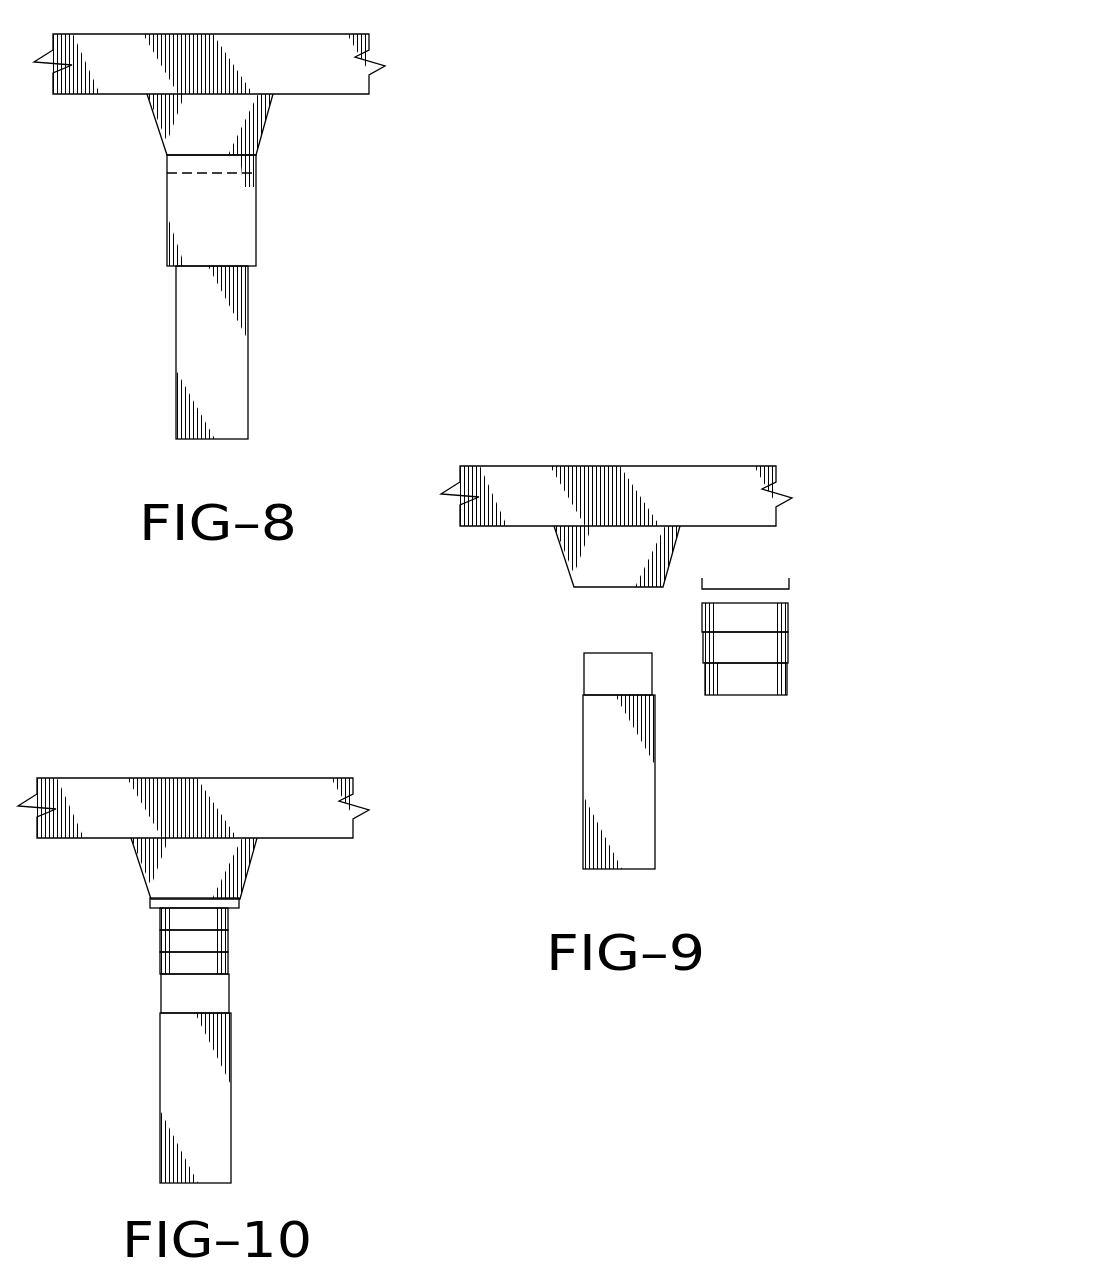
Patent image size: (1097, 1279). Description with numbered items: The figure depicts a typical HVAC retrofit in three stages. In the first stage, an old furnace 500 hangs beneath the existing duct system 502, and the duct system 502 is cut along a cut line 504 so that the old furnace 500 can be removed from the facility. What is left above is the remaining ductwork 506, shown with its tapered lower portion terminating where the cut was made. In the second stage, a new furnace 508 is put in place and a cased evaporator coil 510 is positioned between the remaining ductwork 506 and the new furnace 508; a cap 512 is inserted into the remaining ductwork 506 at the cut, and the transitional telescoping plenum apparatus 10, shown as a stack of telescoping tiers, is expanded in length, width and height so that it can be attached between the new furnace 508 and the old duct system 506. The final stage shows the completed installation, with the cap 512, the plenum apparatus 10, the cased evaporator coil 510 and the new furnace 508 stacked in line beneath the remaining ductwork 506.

In FIG. 9, the transitional telescoping plenum apparatus 10 is at (799, 649).
In FIG. 10, the transitional telescoping plenum apparatus 10 is at (232, 962).
In FIG. 8, the old furnace 500 is at (255, 378).
In FIG. 8, the duct system 502 is at (262, 240).
In FIG. 10, the duct system 502 is at (254, 872).
In FIG. 8, the cut line 504 is at (262, 173).
In FIG. 9, the remaining ductwork 506 is at (579, 577).
In FIG. 9, the new furnace 508 is at (662, 806).
In FIG. 10, the new furnace 508 is at (238, 1125).
In FIG. 9, the cased evaporator coil 510 is at (652, 678).
In FIG. 10, the cased evaporator coil 510 is at (236, 1001).
In FIG. 9, the cap 512 is at (779, 590).
In FIG. 10, the cap 512 is at (246, 903).